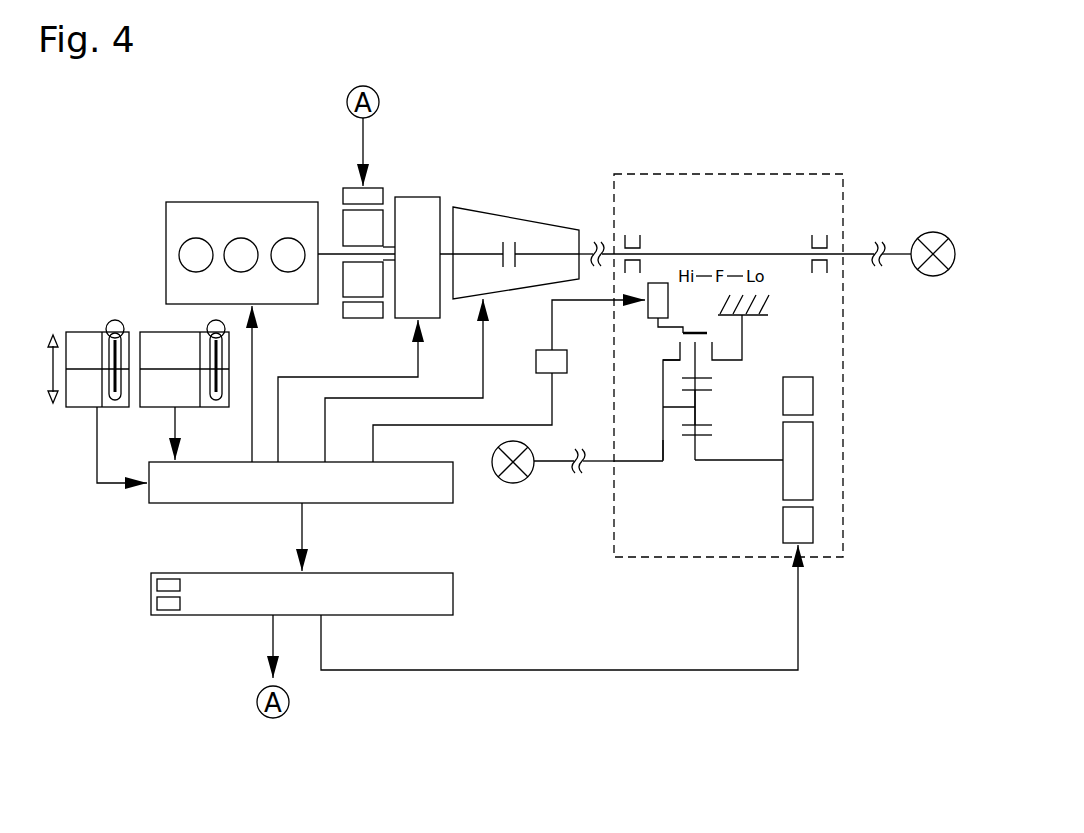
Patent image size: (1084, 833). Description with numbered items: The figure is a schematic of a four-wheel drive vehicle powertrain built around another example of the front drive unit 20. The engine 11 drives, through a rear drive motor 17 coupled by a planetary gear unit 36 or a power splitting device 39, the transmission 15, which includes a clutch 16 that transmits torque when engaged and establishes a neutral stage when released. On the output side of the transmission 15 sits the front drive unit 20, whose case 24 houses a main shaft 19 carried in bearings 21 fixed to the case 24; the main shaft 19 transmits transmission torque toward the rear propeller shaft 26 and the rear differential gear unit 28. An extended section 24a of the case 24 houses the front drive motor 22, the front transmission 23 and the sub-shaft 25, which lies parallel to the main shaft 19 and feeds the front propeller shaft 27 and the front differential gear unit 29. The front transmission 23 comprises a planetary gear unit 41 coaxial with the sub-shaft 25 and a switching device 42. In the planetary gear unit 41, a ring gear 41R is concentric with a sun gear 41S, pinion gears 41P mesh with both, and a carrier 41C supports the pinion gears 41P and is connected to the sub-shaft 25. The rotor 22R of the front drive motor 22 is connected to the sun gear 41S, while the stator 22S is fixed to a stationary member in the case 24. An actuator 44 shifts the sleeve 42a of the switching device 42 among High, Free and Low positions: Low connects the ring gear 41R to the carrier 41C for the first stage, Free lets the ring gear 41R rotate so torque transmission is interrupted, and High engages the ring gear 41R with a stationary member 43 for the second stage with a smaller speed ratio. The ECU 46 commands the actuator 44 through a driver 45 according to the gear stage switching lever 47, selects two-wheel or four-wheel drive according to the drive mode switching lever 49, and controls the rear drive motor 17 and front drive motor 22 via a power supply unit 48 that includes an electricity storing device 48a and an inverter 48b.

The engine 11 is at (186, 203).
The transmission 15 is at (499, 208).
The clutch 16 is at (517, 246).
The rear drive motor 17 is at (351, 201).
The main shaft 19 is at (733, 252).
The front drive unit 20 is at (730, 321).
The bearings 21 is at (640, 237).
The front drive motor 22 is at (846, 438).
The stator 22S is at (800, 396).
The rotor 22R is at (800, 442).
The front transmission 23 is at (662, 470).
The case 24 is at (660, 172).
The extended section 24a is at (845, 531).
The sub-shaft 25 is at (630, 466).
The rear propeller shaft 26 is at (856, 258).
The front propeller shaft 27 is at (596, 466).
The rear differential gear unit 28 is at (935, 277).
The front differential gear unit 29 is at (514, 484).
The planetary gear unit 36 is at (440, 213).
The power splitting device 39 is at (419, 199).
The planetary gear unit 41 is at (673, 449).
The ring gear 41R is at (713, 377).
The pinion gears 41P is at (700, 402).
The sun gear 41S is at (713, 436).
The carrier 41C is at (661, 427).
The switching device 42 is at (666, 341).
The sleeve 42a is at (703, 331).
The stationary member 43 is at (770, 307).
The actuator 44 is at (660, 283).
The driver 45 is at (536, 358).
The ECU 46 is at (395, 505).
The gear stage switching lever 47 is at (93, 331).
The power supply unit 48 is at (474, 600).
The electricity storing device 48a is at (172, 580).
The inverter 48b is at (172, 612).
The drive mode switching lever 49 is at (158, 331).